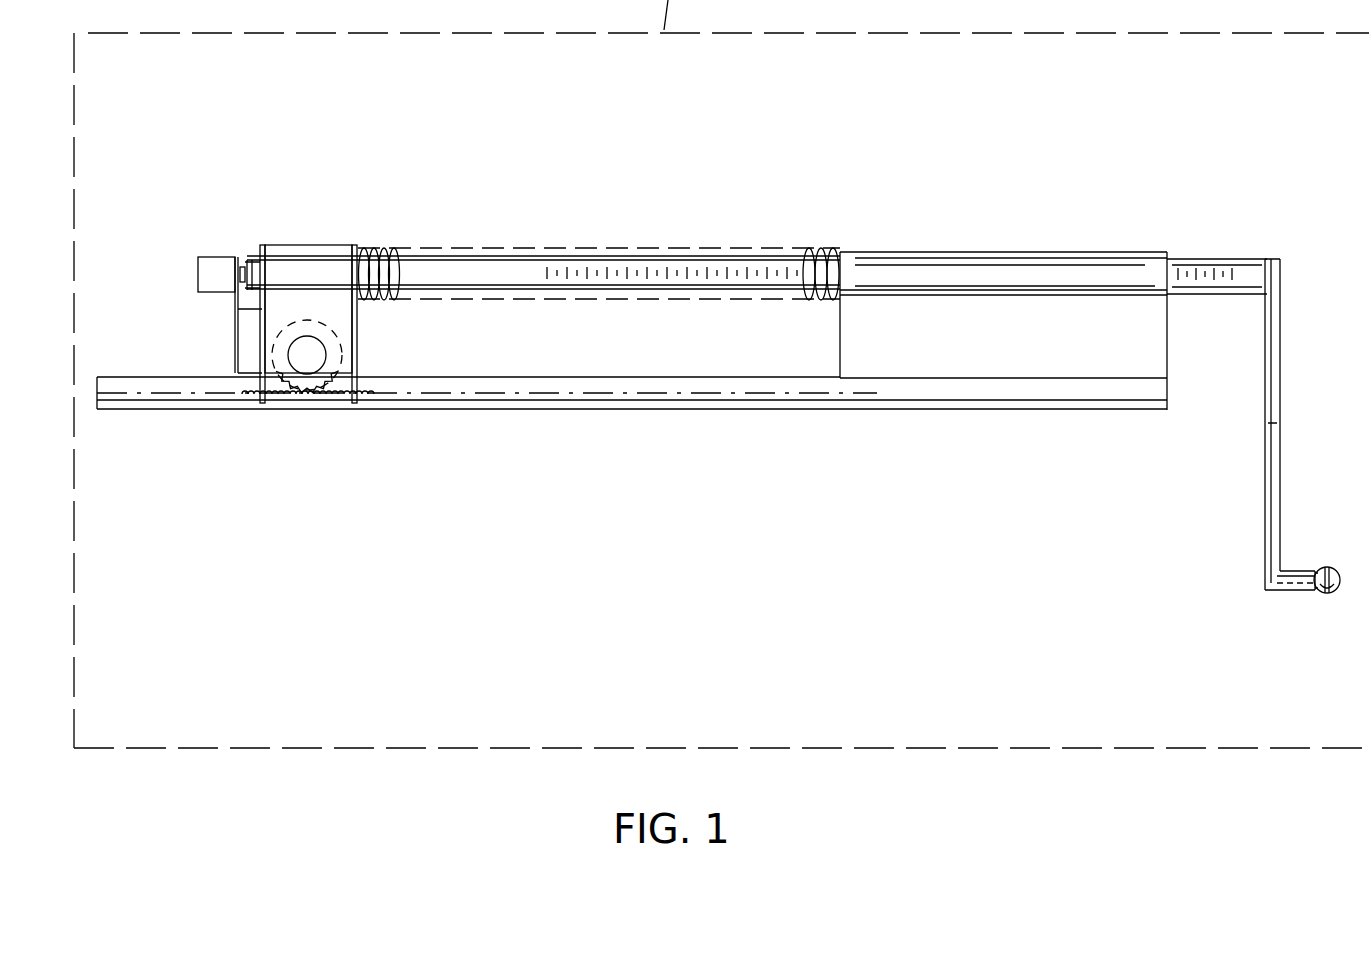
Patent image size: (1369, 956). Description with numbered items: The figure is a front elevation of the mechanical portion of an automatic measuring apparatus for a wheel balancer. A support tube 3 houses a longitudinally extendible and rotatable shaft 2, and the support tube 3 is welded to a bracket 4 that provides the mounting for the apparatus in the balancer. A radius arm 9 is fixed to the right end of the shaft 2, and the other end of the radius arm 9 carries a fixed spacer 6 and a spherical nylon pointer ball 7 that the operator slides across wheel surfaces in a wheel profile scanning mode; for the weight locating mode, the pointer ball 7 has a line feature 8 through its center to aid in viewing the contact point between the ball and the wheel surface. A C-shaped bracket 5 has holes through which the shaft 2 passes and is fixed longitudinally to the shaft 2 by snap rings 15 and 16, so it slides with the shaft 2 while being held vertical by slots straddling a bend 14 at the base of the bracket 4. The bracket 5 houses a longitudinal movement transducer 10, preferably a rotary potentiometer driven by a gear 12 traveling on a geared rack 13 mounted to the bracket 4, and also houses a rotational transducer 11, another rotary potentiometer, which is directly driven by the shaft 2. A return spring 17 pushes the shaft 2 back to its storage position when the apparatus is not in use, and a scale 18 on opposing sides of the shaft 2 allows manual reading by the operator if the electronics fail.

The shaft 2 is at (1206, 259).
The support tube 3 is at (980, 252).
The bracket 4 is at (1169, 350).
The C-shaped bracket 5 is at (287, 245).
The spacer 6 is at (1297, 592).
The pointer ball 7 is at (1339, 578).
The line feature 8 is at (1331, 591).
The radius arm 9 is at (1282, 325).
The longitudinal movement transducer 10 is at (325, 366).
The rotational transducer 11 is at (198, 270).
The gear 12 is at (282, 378).
The geared rack 13 is at (360, 392).
The bend 14 is at (444, 398).
The snap ring 15 is at (260, 247).
The snap ring 16 is at (360, 250).
The return spring 17 is at (823, 250).
The scale 18 is at (1232, 275).